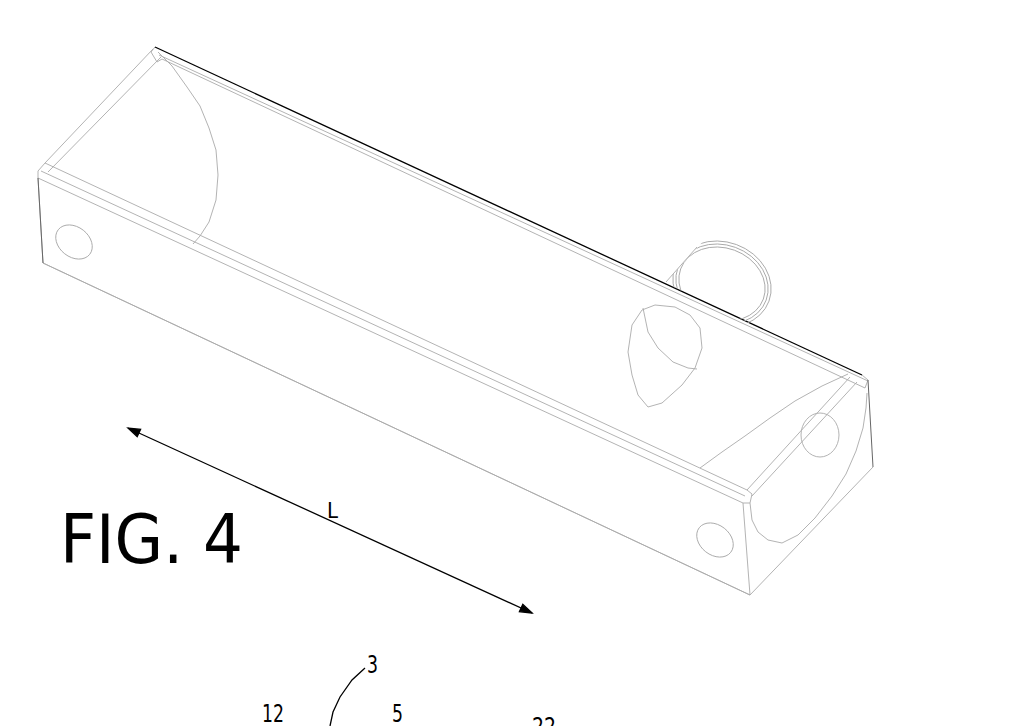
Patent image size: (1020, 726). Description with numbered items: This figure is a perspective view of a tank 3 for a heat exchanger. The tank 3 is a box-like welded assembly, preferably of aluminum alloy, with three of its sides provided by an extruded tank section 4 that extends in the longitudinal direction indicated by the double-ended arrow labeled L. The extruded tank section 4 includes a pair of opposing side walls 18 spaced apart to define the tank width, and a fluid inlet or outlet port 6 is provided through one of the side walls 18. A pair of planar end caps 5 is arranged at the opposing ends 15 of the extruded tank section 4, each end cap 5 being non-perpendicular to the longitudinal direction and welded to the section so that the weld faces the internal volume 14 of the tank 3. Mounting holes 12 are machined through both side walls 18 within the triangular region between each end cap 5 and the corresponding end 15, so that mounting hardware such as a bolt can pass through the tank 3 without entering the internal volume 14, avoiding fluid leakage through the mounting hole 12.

The tank 3 is at (453, 321).
The extruded tank section 4 is at (396, 429).
The planar end cap 5 is at (487, 297).
The fluid inlet or outlet port 6 is at (735, 251).
The mounting hole 12 is at (459, 423).
The internal volume 14 is at (513, 231).
The end of the extruded tank section 15 is at (42, 272).
The side wall 18 is at (451, 271).